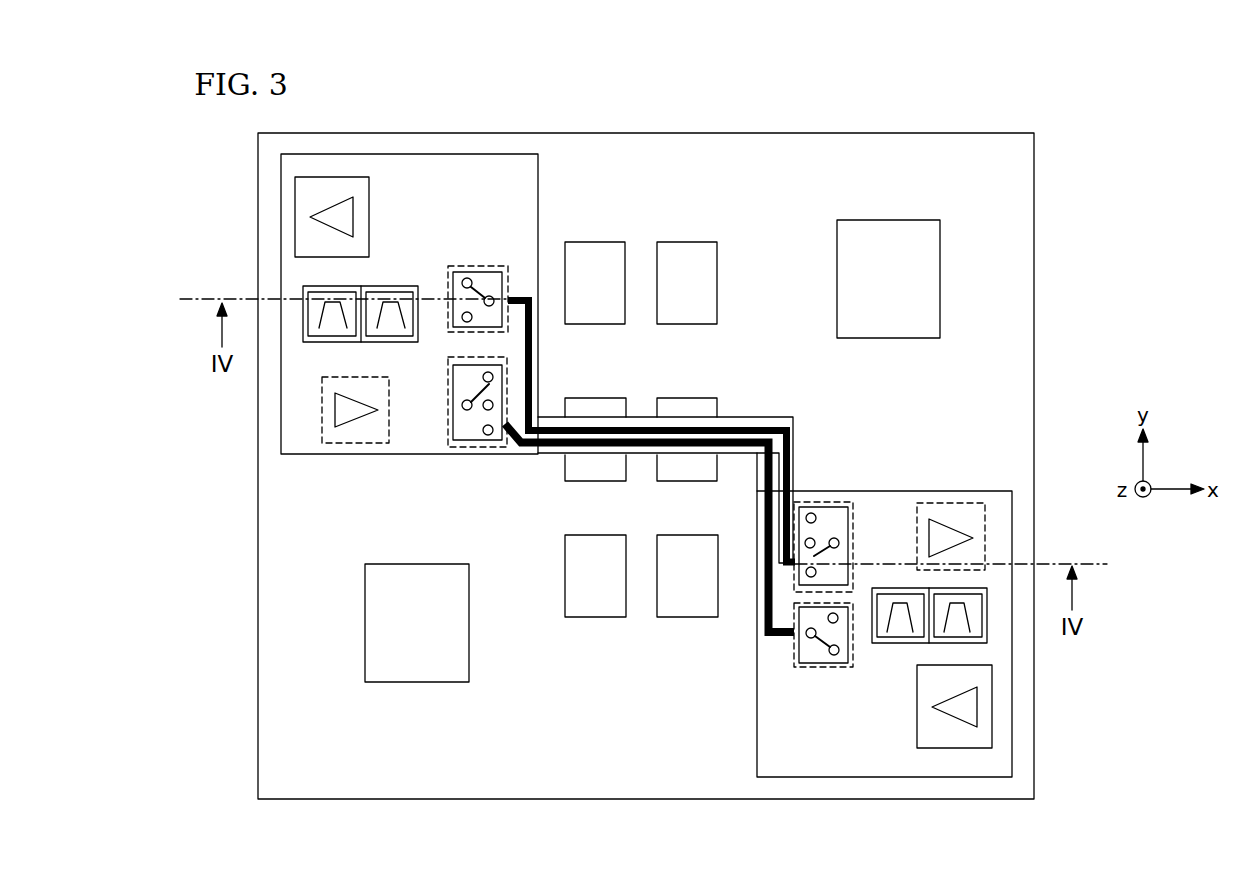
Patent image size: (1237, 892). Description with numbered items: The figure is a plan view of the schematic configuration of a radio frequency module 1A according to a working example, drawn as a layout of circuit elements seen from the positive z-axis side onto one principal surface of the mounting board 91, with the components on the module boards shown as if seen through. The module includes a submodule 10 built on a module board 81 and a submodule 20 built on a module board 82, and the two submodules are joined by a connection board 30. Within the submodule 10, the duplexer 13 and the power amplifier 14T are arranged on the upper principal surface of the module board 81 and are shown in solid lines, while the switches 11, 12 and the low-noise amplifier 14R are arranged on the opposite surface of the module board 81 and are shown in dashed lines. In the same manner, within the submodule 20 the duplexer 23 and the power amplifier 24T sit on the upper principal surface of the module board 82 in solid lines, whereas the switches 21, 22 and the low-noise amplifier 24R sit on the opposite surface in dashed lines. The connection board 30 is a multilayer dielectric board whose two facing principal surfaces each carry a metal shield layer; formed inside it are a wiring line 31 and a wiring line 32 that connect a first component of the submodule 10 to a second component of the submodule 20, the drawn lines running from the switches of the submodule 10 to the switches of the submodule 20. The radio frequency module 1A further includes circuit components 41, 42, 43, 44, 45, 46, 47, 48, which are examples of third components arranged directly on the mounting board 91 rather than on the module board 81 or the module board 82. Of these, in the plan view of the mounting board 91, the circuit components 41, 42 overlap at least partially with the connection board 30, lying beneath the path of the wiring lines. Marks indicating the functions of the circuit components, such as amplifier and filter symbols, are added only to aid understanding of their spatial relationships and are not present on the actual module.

The radio frequency module 1A is at (1071, 125).
The submodule 10 is at (542, 187).
The switch 11 is at (448, 421).
The switch 12 is at (466, 266).
The duplexer 13 is at (378, 286).
The power amplifier 14T is at (370, 210).
The low-noise amplifier 14R is at (345, 378).
The submodule 20 is at (757, 728).
The switch 21 is at (853, 522).
The switch 22 is at (827, 667).
The duplexer 23 is at (912, 643).
The power amplifier 24T is at (917, 720).
The low-noise amplifier 24R is at (917, 518).
The connection board 30 is at (656, 467).
The wiring line 31 is at (645, 456).
The wiring line 32 is at (640, 427).
The circuit component 41 is at (593, 481).
The circuit component 42 is at (688, 481).
The circuit component 43 is at (588, 242).
The circuit component 44 is at (690, 242).
The circuit component 45 is at (593, 617).
The circuit component 46 is at (688, 617).
The circuit component 47 is at (425, 564).
The circuit component 48 is at (897, 220).
The module board 81 is at (403, 455).
The module board 82 is at (905, 491).
The mounting board 91 is at (1027, 272).